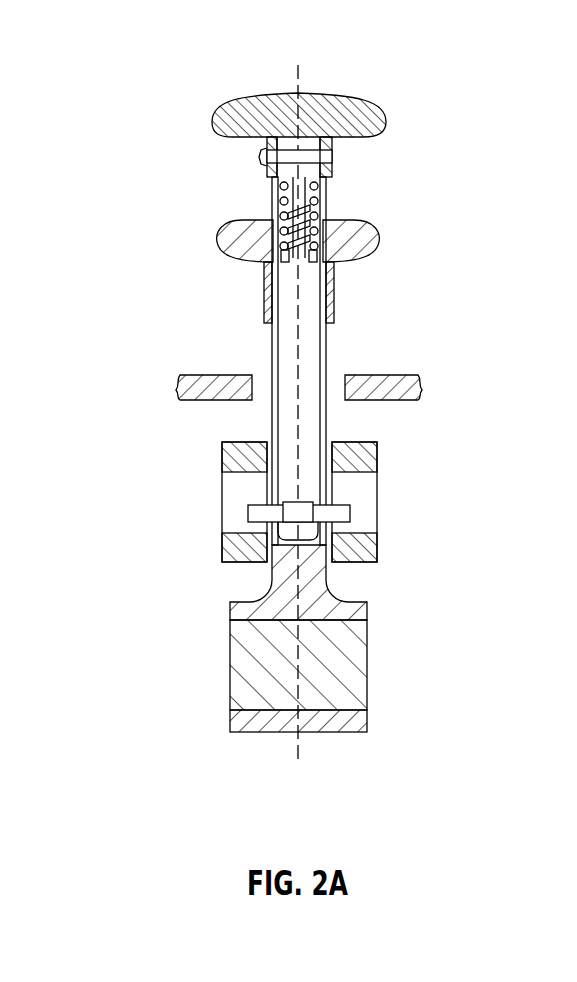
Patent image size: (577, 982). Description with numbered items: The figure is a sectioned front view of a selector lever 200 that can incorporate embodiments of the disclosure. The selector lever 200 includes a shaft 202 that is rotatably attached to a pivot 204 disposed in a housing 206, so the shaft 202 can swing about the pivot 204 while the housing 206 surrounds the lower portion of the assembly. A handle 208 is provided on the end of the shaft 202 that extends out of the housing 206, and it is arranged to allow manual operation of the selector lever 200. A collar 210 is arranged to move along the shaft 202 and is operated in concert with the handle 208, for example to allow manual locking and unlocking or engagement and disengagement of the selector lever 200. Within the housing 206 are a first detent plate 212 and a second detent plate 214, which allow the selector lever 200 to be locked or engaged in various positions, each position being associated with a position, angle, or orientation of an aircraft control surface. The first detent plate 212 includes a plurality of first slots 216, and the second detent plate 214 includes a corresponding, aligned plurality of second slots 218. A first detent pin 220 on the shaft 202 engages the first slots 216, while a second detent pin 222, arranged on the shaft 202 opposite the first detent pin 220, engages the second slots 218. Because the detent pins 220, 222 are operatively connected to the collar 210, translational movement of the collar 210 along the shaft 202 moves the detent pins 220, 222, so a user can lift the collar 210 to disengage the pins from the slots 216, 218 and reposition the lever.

The selector lever 200 is at (430, 163).
The shaft 202 is at (324, 348).
The pivot 204 is at (367, 665).
The housing 206 is at (192, 375).
The handle 208 is at (323, 92).
The collar 210 is at (218, 232).
The first detent plate 212 is at (372, 456).
The second detent plate 214 is at (228, 456).
The first slots 216 is at (368, 495).
The second slots 218 is at (233, 495).
The first detent pin 220 is at (350, 515).
The second detent pin 222 is at (248, 512).